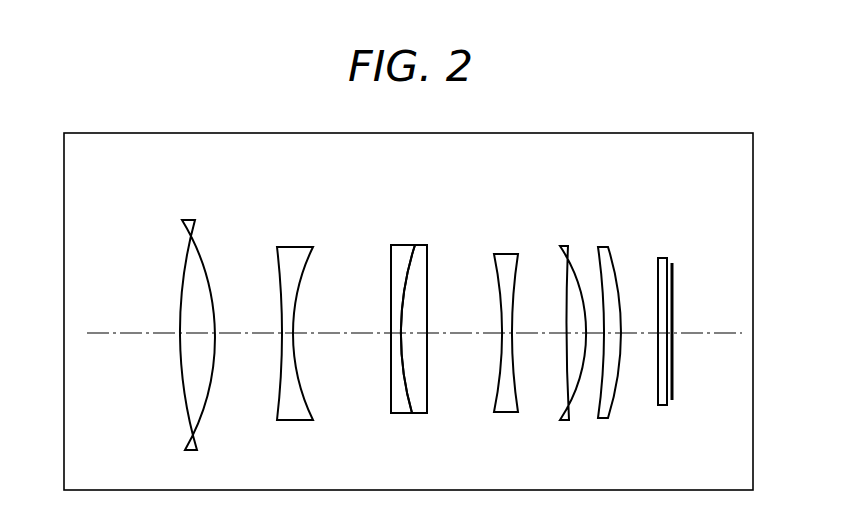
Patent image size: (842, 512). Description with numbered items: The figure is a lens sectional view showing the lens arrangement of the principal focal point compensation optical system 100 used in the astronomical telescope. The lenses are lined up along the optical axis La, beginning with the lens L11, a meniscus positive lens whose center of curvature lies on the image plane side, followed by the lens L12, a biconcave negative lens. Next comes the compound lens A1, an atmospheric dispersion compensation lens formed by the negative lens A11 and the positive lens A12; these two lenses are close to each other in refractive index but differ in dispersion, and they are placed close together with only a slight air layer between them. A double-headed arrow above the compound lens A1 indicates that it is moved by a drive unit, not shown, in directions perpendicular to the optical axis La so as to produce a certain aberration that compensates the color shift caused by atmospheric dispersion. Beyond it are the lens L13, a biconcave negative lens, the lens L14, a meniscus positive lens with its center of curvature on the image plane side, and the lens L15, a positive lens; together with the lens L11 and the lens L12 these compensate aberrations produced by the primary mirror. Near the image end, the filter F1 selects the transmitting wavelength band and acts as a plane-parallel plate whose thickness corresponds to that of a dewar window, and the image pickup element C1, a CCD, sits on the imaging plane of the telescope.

The principal focal point compensation optical system 100 is at (588, 133).
The optical axis La is at (113, 340).
The lens L11 is at (191, 221).
The lens L12 is at (296, 248).
The compound lens A1 is at (408, 146).
The negative lens A11 is at (397, 413).
The positive lens A12 is at (418, 413).
The lens L13 is at (507, 254).
The lens L14 is at (563, 246).
The lens L15 is at (607, 247).
The filter F1 is at (661, 258).
The image pickup element C1 is at (675, 275).